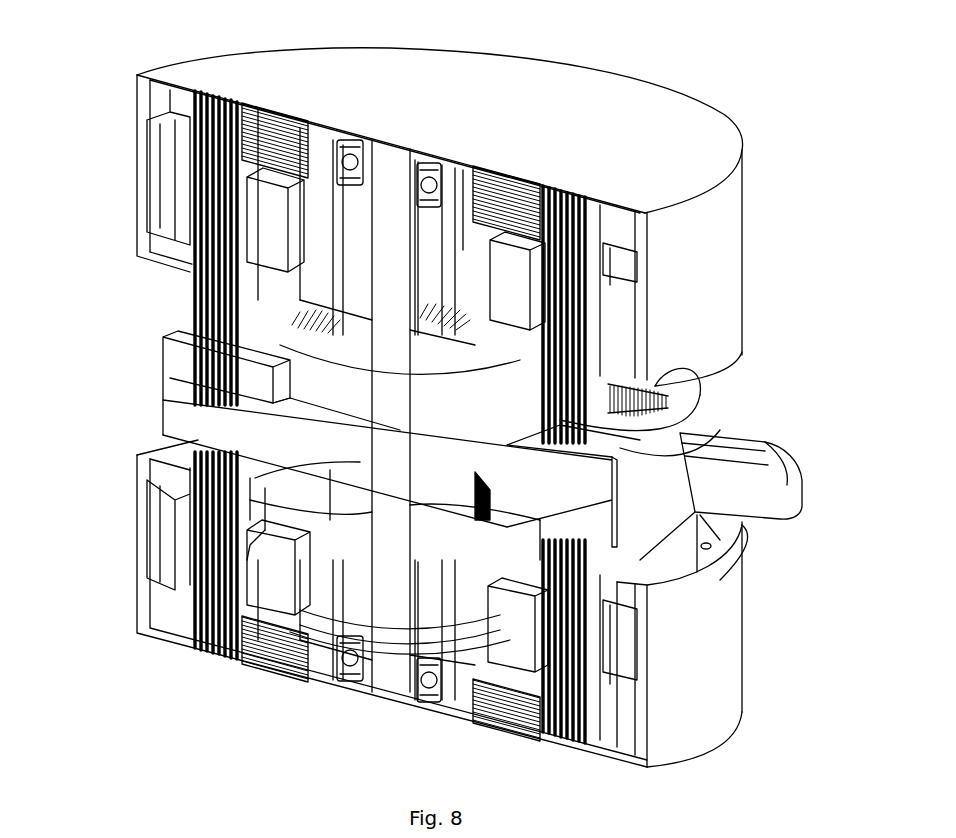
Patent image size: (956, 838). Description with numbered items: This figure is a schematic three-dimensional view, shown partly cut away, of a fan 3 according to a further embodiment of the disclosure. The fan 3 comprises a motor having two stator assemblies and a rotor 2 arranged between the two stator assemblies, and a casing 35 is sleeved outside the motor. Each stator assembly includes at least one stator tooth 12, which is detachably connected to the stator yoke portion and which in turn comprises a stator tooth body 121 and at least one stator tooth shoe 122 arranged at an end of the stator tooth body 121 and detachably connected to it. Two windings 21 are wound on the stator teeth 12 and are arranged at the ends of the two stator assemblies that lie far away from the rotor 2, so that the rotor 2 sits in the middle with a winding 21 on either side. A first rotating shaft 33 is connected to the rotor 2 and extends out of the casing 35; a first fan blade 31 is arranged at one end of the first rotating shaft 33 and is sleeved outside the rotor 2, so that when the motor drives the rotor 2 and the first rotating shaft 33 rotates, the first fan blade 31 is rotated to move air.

The fan 3 is at (383, 32).
The casing 35 is at (685, 158).
The winding 21 is at (263, 216).
The rotor 2 is at (255, 390).
The first rotating shaft 33 is at (390, 442).
The first fan blade 31 is at (677, 472).
The stator tooth 12 is at (68, 492).
The stator tooth shoe 122 is at (260, 472).
The stator tooth body 121 is at (252, 520).